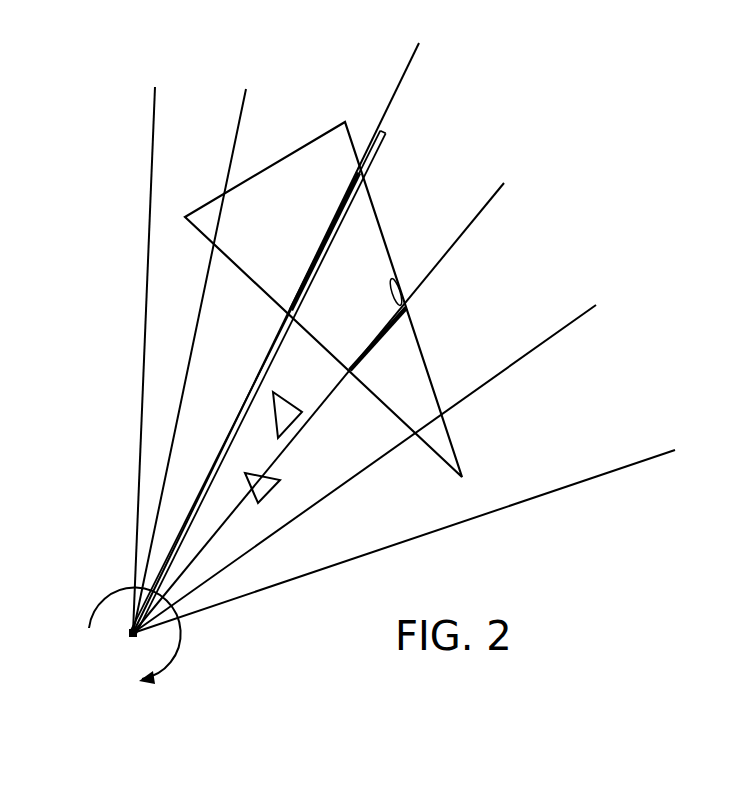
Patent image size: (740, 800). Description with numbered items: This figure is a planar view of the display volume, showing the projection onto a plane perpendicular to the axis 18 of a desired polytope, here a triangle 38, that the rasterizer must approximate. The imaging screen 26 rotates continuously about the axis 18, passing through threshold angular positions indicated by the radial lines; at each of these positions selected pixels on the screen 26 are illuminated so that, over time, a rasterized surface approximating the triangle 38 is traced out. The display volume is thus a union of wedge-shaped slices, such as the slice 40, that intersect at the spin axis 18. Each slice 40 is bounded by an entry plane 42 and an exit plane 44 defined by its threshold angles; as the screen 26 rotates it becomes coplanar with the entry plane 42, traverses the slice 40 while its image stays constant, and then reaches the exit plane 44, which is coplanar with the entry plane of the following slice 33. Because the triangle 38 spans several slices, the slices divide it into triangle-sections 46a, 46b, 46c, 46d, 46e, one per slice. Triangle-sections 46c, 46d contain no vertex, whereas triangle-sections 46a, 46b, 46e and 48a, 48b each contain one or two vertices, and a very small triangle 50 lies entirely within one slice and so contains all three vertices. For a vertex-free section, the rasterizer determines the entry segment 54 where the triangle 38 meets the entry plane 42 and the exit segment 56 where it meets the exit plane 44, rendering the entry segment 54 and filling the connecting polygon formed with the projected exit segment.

The axis 18 is at (130, 637).
The imaging screen 26 is at (385, 147).
The following slice 33 is at (530, 287).
The triangle 38 is at (296, 151).
The slice 40 is at (490, 143).
The entry plane 42 is at (404, 66).
The exit plane 44 is at (504, 196).
The triangle-section 46a is at (207, 215).
The triangle-section 46b is at (292, 252).
The triangle-section 46c is at (353, 322).
The triangle-section 46d is at (413, 383).
The triangle-section 46e is at (445, 448).
The triangle-section 48a is at (246, 474).
The triangle-section 48b is at (280, 483).
The triangle 50 is at (284, 412).
The entry segment 54 is at (337, 208).
The exit segment 56 is at (406, 296).